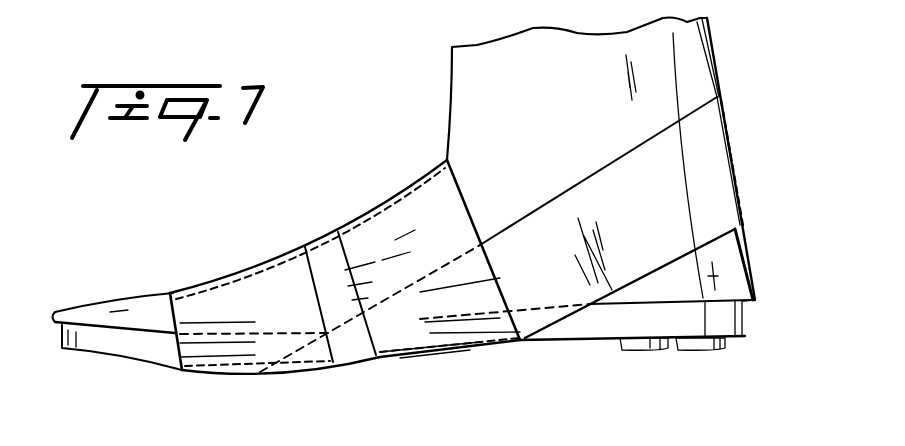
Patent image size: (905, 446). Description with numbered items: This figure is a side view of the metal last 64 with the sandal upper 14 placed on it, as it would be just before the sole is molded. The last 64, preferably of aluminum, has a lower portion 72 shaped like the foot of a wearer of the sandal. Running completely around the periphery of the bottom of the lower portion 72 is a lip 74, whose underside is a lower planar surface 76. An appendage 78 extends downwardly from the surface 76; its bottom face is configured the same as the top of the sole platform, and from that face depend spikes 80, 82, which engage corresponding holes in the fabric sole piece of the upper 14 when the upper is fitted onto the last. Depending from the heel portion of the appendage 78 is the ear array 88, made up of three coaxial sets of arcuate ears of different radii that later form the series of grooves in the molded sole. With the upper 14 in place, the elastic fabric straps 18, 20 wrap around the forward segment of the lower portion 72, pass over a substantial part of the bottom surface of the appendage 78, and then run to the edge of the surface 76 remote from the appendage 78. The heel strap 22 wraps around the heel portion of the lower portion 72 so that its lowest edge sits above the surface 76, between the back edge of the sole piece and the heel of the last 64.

The upper 14 is at (393, 188).
The strap 18 is at (248, 287).
The strap 20 is at (360, 240).
The heel strap 22 is at (707, 165).
The last 64 is at (730, 70).
The lower portion of last 72 is at (472, 95).
The lip 74 is at (62, 315).
The lower planar surface 76 is at (60, 325).
The appendage 78 is at (745, 318).
The spike 80 is at (252, 375).
The spike 82 is at (485, 353).
The ear array 88 is at (690, 352).